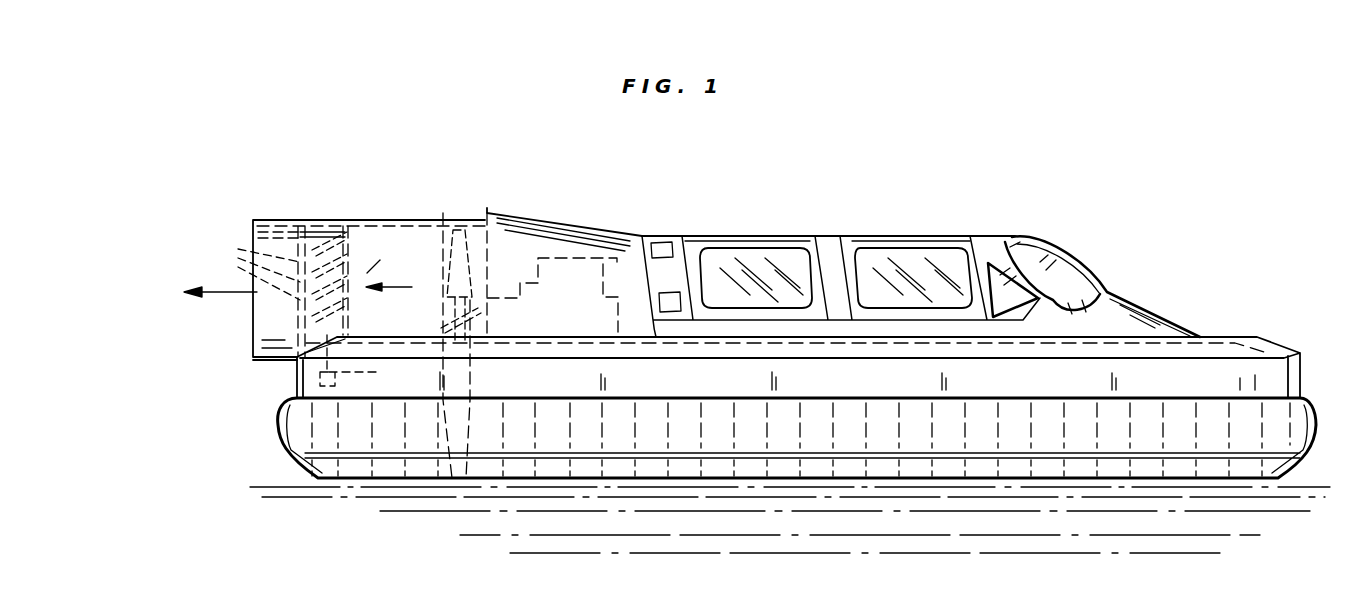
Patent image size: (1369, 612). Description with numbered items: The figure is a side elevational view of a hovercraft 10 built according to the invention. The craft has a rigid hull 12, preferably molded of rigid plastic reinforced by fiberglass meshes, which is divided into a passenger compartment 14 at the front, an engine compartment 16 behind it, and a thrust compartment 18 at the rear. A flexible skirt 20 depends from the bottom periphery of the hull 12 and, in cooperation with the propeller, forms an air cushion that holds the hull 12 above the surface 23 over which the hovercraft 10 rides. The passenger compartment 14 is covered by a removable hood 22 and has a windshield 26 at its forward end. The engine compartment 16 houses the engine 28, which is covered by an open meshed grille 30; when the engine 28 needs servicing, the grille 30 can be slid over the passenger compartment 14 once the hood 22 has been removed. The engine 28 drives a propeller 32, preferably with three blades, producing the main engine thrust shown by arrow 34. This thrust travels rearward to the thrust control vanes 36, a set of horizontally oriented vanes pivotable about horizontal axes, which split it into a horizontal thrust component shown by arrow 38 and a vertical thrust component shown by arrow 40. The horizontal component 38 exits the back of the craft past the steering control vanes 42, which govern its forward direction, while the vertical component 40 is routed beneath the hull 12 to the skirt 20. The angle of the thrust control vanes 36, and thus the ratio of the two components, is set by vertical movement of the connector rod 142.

The hovercraft 10 is at (1142, 181).
The rigid hull 12 is at (1282, 378).
The passenger compartment 14 is at (921, 251).
The engine compartment 16 is at (592, 207).
The thrust compartment 18 is at (358, 220).
The flexible skirt 20 is at (1015, 440).
The removable hood 22 is at (782, 236).
The surface 23 is at (767, 541).
The windshield 26 is at (1050, 263).
The engine 28 is at (580, 257).
The open meshed grille 30 is at (520, 237).
The propeller 32 is at (446, 214).
The main engine thrust 34 is at (383, 298).
The thrust control vanes 36 is at (403, 207).
The horizontal thrust component 38 is at (230, 296).
The vertical thrust component 40 is at (364, 363).
The steering control vanes 42 is at (280, 237).
The connector rod 142 is at (394, 259).